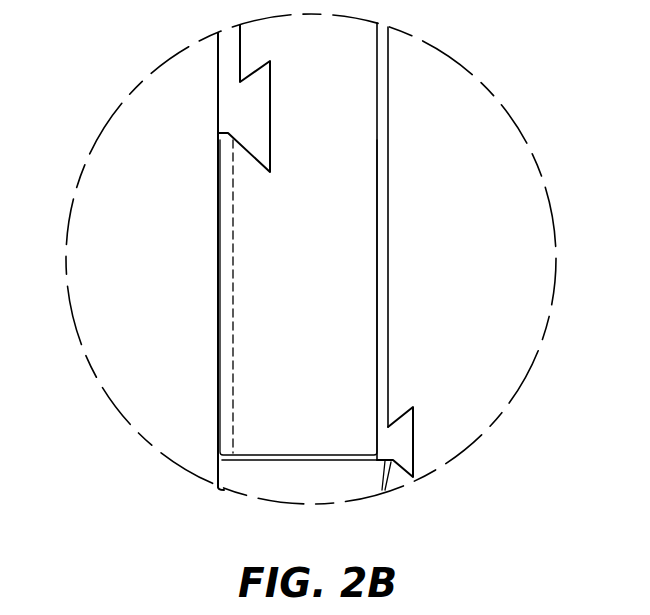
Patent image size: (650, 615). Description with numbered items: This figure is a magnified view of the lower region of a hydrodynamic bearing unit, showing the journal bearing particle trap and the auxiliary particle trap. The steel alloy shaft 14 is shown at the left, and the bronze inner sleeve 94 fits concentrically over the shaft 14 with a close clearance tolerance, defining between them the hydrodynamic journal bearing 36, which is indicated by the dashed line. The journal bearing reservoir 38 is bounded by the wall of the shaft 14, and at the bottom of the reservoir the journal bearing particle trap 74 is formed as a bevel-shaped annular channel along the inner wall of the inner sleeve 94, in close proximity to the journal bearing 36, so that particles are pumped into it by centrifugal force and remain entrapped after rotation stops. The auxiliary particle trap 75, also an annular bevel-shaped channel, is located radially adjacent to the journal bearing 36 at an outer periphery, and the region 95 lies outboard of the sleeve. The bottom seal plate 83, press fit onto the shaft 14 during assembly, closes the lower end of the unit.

The shaft 14 is at (147, 271).
The hydrodynamic journal bearing 36 is at (233, 275).
The journal bearing reservoir 38 is at (217, 304).
The journal bearing particle trap 74 is at (255, 113).
The auxiliary particle trap 75 is at (413, 435).
The bottom seal plate 83 is at (320, 492).
The inner sleeve 94 is at (325, 222).
The outer region 95 is at (483, 234).